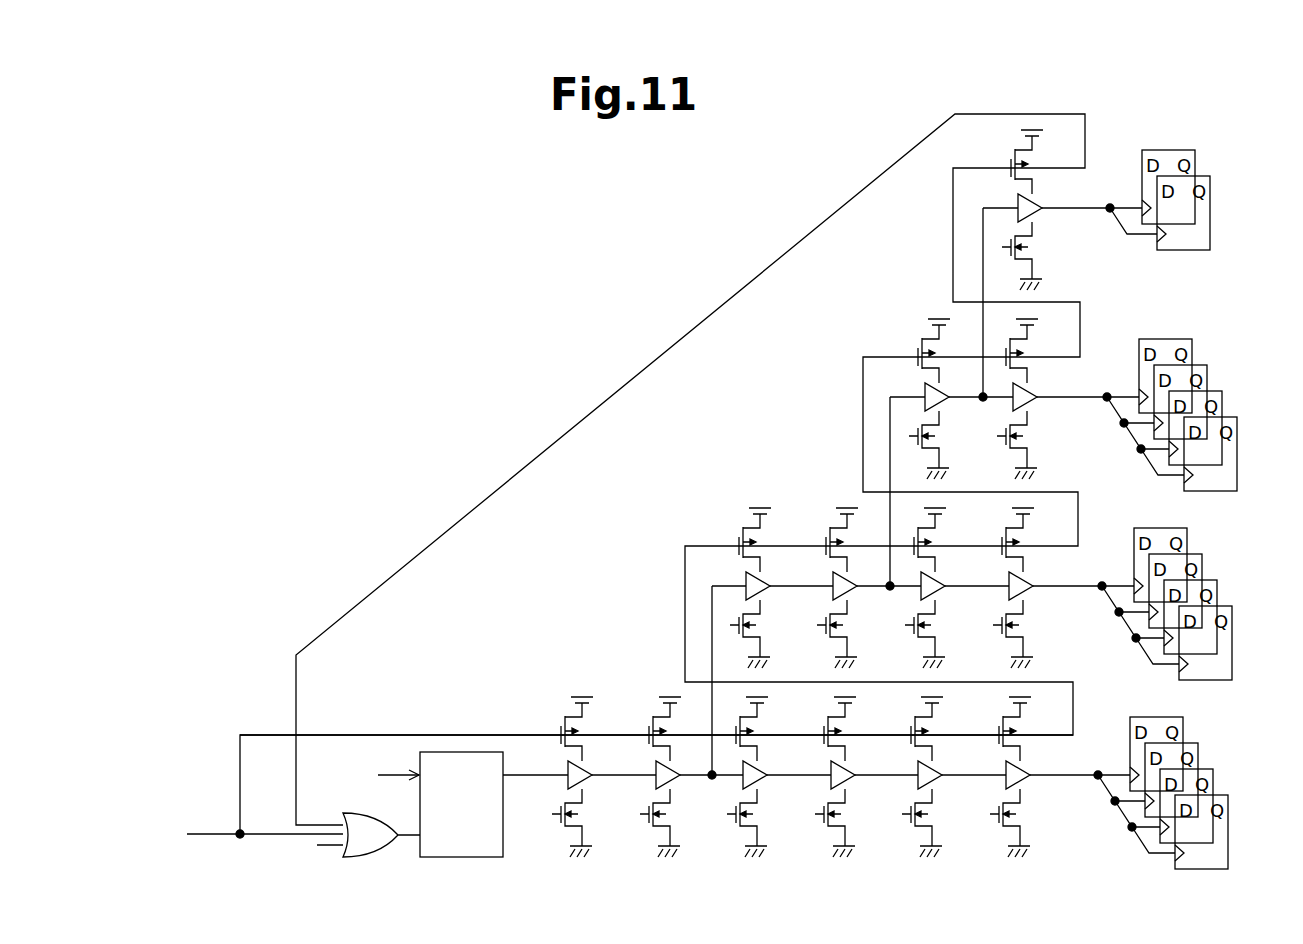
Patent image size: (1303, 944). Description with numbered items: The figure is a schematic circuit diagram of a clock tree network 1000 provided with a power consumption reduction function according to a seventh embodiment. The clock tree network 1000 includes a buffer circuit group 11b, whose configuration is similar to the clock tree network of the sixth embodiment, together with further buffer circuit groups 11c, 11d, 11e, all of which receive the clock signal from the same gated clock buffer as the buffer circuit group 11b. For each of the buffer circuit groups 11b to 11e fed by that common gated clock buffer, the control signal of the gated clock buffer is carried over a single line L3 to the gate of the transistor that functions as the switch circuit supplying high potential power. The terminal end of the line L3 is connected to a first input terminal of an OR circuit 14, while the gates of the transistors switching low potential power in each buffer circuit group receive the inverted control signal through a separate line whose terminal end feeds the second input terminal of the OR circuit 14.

The clock tree network 1000 is at (345, 194).
The buffer circuit group 11b is at (621, 668).
The buffer circuit group 11c is at (784, 493).
The buffer circuit group 11d is at (895, 329).
The buffer circuit group 11e is at (935, 228).
The OR circuit 14 is at (377, 857).
The line L3 is at (488, 732).